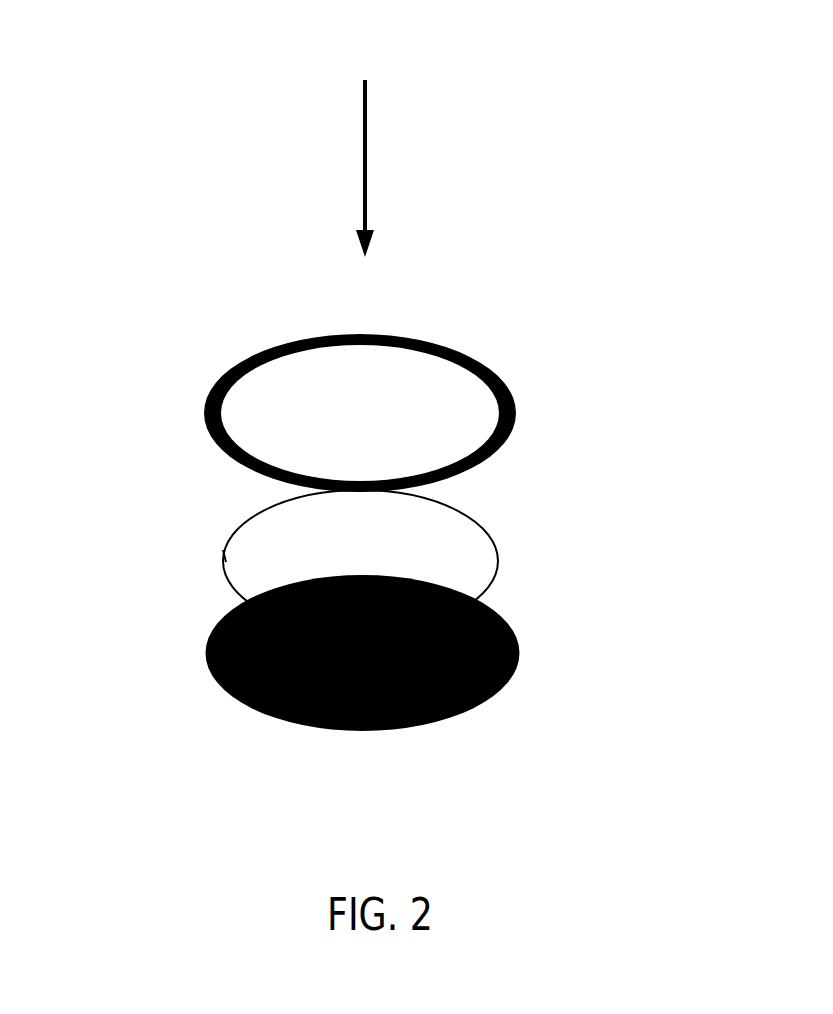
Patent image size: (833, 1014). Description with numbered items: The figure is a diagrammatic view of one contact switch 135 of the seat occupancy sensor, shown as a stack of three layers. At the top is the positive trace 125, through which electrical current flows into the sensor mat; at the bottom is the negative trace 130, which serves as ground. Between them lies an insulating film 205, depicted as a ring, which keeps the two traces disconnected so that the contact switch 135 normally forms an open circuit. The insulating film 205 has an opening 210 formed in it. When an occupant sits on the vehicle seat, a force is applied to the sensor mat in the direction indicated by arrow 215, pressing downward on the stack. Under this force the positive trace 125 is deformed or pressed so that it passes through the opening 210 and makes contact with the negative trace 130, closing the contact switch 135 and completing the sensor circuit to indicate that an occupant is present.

The contact switch 135 is at (700, 81).
The arrow 215 is at (368, 162).
The positive trace 125 is at (515, 405).
The insulating film 205 is at (497, 560).
The negative trace 130 is at (518, 667).
The opening 210 is at (244, 549).